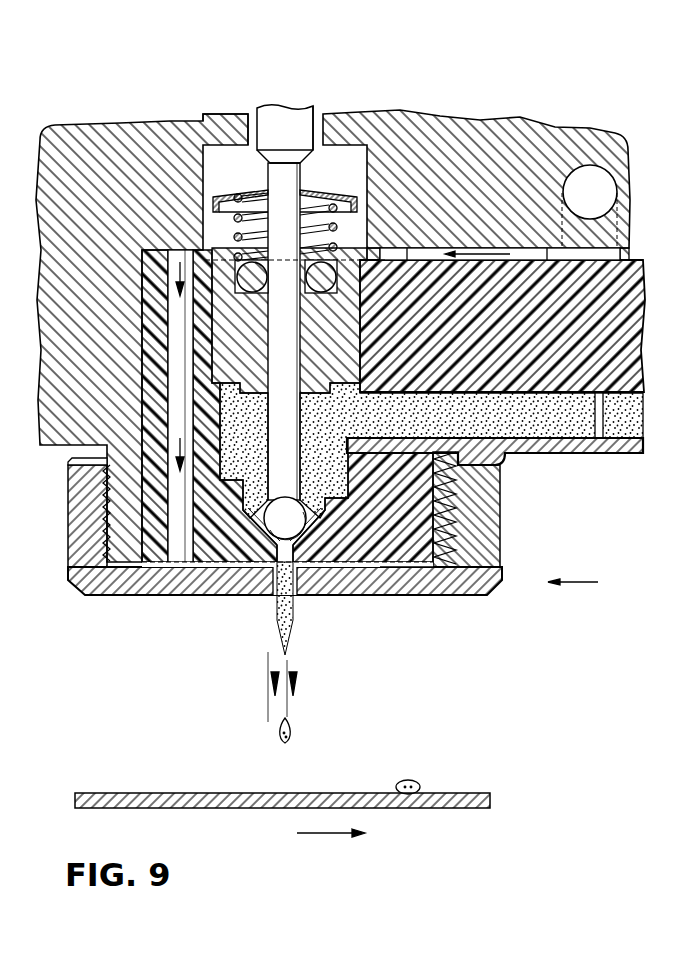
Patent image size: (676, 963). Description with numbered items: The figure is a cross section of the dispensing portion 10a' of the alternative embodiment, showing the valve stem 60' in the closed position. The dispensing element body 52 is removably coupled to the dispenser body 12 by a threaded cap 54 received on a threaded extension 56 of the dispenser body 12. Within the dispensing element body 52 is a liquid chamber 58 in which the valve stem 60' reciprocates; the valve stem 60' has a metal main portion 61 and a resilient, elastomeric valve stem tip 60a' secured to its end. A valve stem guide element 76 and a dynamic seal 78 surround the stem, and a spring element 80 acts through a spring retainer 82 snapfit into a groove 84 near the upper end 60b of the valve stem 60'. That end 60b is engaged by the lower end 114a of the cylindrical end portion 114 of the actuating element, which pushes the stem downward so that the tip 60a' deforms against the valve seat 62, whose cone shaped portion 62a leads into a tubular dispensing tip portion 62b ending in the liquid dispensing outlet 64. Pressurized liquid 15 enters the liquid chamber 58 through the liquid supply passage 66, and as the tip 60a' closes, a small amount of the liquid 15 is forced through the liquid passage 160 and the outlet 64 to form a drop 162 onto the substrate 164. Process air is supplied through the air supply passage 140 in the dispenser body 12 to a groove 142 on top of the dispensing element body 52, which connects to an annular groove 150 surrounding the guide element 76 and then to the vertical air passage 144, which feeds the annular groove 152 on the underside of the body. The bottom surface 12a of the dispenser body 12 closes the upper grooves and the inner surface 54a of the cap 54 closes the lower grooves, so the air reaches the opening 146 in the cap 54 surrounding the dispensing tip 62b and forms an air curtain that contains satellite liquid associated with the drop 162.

The dispensing portion 10a' is at (597, 583).
The dispenser body 12 is at (473, 120).
The bottom surface of the dispenser body 12a is at (548, 255).
The liquid 15 is at (243, 482).
The dispensing element body 52 is at (567, 453).
The threaded cap 54 is at (504, 570).
The inner surface of the cap 54a is at (142, 595).
The threaded extension 56 is at (450, 512).
The liquid chamber 58 is at (240, 413).
The valve stem 60' is at (305, 331).
The valve stem tip 60a' is at (235, 561).
The end of the valve stem 60b is at (310, 158).
The main portion of the valve stem 61 is at (300, 419).
The valve seat 62 is at (335, 556).
The cone shaped portion 62a is at (325, 527).
The tubular dispensing tip portion 62b is at (278, 600).
The liquid dispensing outlet 64 is at (292, 660).
The liquid supply passage 66 is at (602, 453).
The valve stem guide element 76 is at (230, 318).
The dynamic seal 78 is at (225, 262).
The spring element 80 is at (234, 216).
The spring retainer 82 is at (217, 193).
The groove 84 is at (250, 152).
The cylindrical end portion 114 is at (287, 125).
The lower end of the actuating element 114a is at (314, 148).
The air supply passage 140 is at (590, 190).
The groove 142 is at (435, 258).
The air passage 144 is at (180, 360).
The opening 146 is at (298, 568).
The annular groove 150 is at (393, 253).
The annular groove 152 is at (403, 568).
The liquid passage 160 is at (293, 632).
The drop 162 is at (277, 731).
The substrate 164 is at (480, 793).